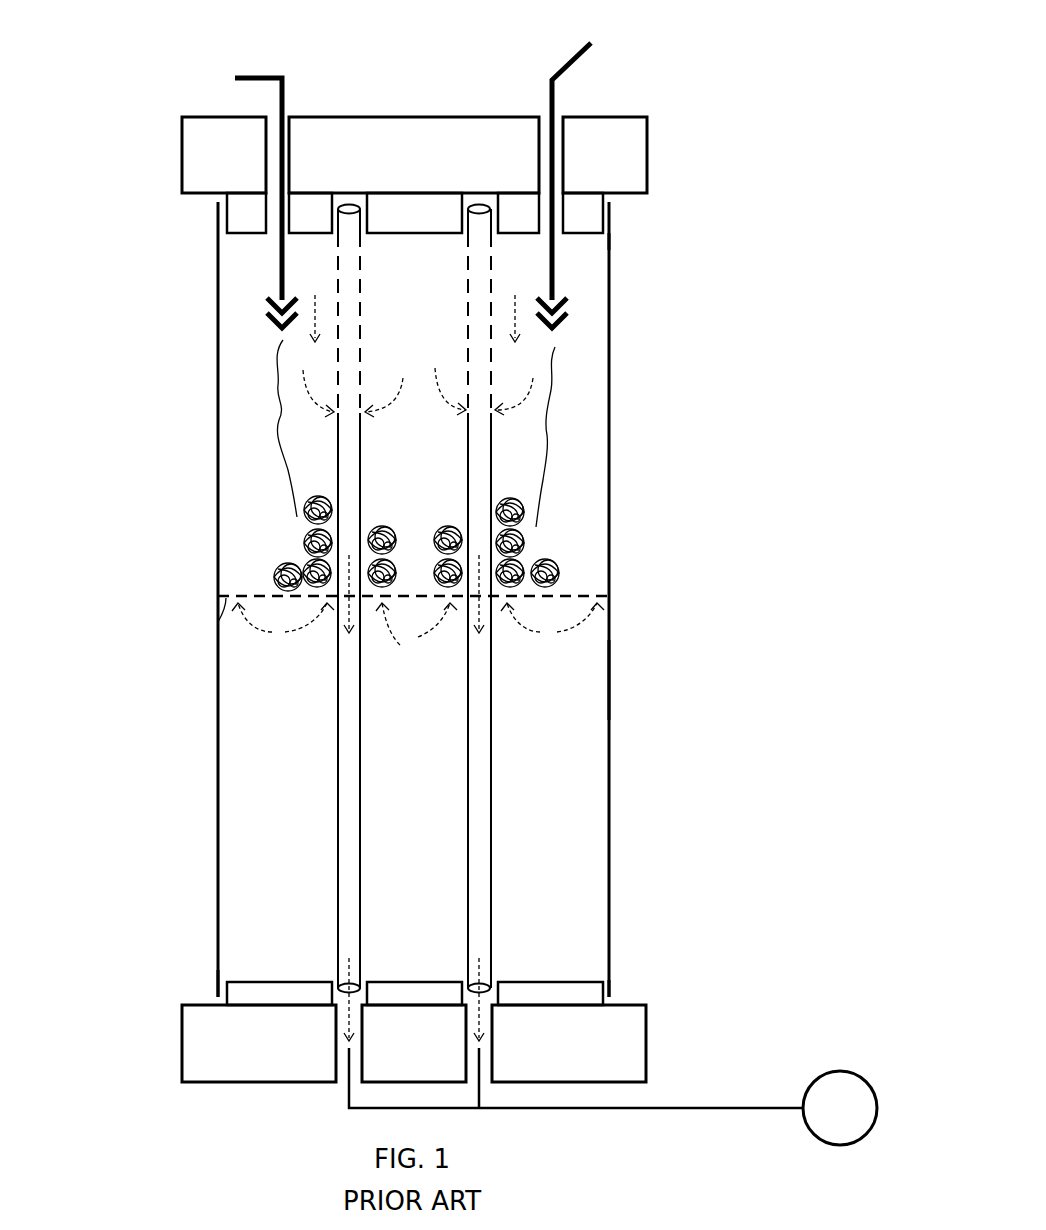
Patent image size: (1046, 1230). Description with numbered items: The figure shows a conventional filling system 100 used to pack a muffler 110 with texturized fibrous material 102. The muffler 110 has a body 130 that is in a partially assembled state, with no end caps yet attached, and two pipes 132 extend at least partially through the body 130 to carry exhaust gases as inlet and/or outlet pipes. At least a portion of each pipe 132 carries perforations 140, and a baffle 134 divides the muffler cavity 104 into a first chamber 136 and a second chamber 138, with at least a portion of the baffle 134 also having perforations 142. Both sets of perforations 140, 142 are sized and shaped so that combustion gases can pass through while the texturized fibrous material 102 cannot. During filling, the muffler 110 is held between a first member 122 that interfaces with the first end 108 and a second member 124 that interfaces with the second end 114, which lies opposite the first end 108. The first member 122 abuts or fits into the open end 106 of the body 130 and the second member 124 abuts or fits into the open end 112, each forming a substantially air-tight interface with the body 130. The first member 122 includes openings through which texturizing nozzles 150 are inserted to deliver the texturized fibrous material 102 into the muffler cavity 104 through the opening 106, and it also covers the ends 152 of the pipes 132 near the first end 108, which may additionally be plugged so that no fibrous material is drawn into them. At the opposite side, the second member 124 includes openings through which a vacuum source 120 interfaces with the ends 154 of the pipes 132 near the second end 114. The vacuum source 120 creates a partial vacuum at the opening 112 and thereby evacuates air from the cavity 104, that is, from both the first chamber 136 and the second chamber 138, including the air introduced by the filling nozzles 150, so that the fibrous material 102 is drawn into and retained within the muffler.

The filling system 100 is at (45, 121).
The texturized fibrous material 102 is at (277, 425).
The muffler cavity 104 is at (593, 400).
The opening 106 is at (200, 199).
The first end 108 is at (611, 237).
The muffler 110 is at (66, 552).
The opening 112 is at (628, 992).
The second end 114 is at (218, 963).
The vacuum source 120 is at (837, 1072).
The first member 122 is at (646, 117).
The second member 124 is at (182, 1045).
The body 130 is at (609, 707).
The pipes 132 is at (338, 738).
The baffle 134 is at (218, 622).
The first chamber 136 is at (397, 471).
The second chamber 138 is at (397, 836).
The perforations 140 is at (493, 257).
The perforations 142 is at (599, 595).
The texturizing nozzles 150 is at (260, 76).
The ends 152 is at (477, 208).
The ends 154 is at (474, 981).